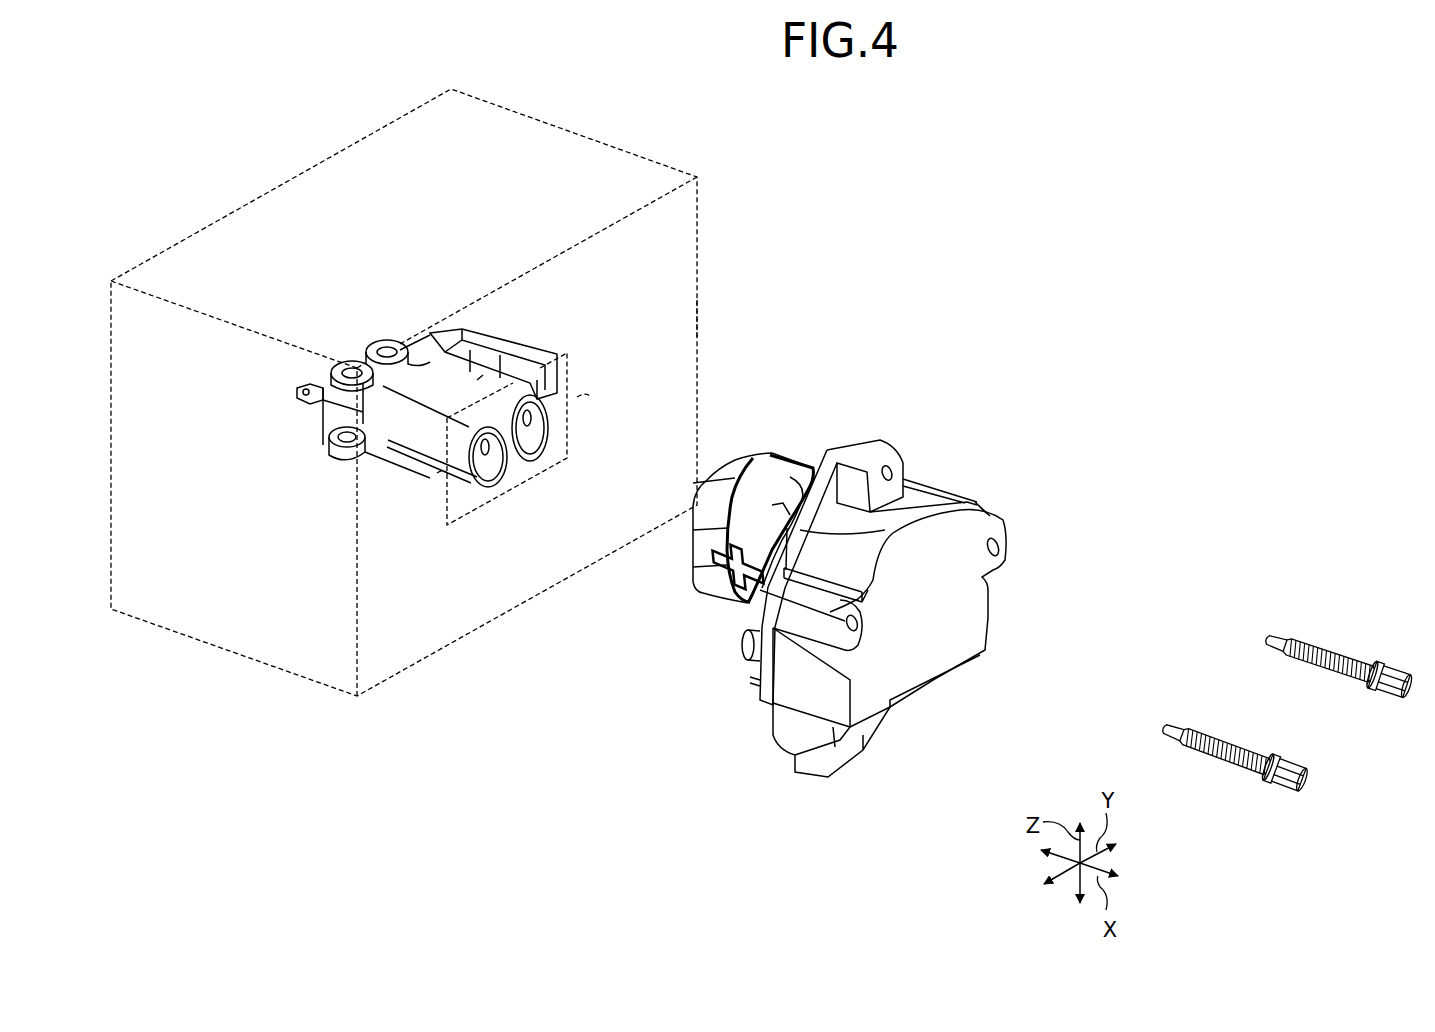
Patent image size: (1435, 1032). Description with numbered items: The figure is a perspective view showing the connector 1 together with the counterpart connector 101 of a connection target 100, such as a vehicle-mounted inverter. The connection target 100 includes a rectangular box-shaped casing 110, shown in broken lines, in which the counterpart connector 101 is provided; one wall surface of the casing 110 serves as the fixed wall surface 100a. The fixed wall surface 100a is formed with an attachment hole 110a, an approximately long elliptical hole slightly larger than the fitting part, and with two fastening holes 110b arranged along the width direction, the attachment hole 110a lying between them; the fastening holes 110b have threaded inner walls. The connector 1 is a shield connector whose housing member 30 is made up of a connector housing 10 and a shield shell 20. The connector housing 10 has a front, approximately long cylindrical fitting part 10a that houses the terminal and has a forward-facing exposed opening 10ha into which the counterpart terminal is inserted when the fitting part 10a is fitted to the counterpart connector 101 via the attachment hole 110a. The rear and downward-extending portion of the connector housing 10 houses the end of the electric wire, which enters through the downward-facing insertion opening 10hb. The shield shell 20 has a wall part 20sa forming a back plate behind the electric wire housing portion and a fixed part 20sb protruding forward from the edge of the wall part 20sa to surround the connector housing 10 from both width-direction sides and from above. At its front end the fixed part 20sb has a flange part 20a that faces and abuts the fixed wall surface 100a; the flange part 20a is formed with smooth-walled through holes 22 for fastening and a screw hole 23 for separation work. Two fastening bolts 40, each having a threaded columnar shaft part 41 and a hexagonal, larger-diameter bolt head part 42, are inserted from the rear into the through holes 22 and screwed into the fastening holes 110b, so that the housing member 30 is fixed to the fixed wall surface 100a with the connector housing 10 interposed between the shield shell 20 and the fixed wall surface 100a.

The connector 1 is at (1240, 473).
The connector housing 10 is at (755, 588).
The fitting part 10a is at (757, 598).
The exposed opening 10ha is at (680, 550).
The insertion opening 10hb is at (833, 780).
The shield shell 20 is at (920, 543).
The flange part 20a is at (977, 505).
The wall part 20sa is at (968, 600).
The fixed part 20sb is at (828, 697).
The through holes 22 is at (999, 547).
The screw hole 23 is at (892, 474).
The housing member 30 is at (837, 333).
The fastening bolts 40 is at (1297, 729).
The shaft part 41 is at (1362, 652).
The bolt head part 42 is at (1333, 581).
The connection target 100 is at (404, 370).
The fixed wall surface 100a is at (676, 331).
The counterpart connector 101 is at (510, 352).
The casing 110 is at (607, 160).
The attachment hole 110a is at (478, 496).
The fastening holes 110b is at (577, 397).